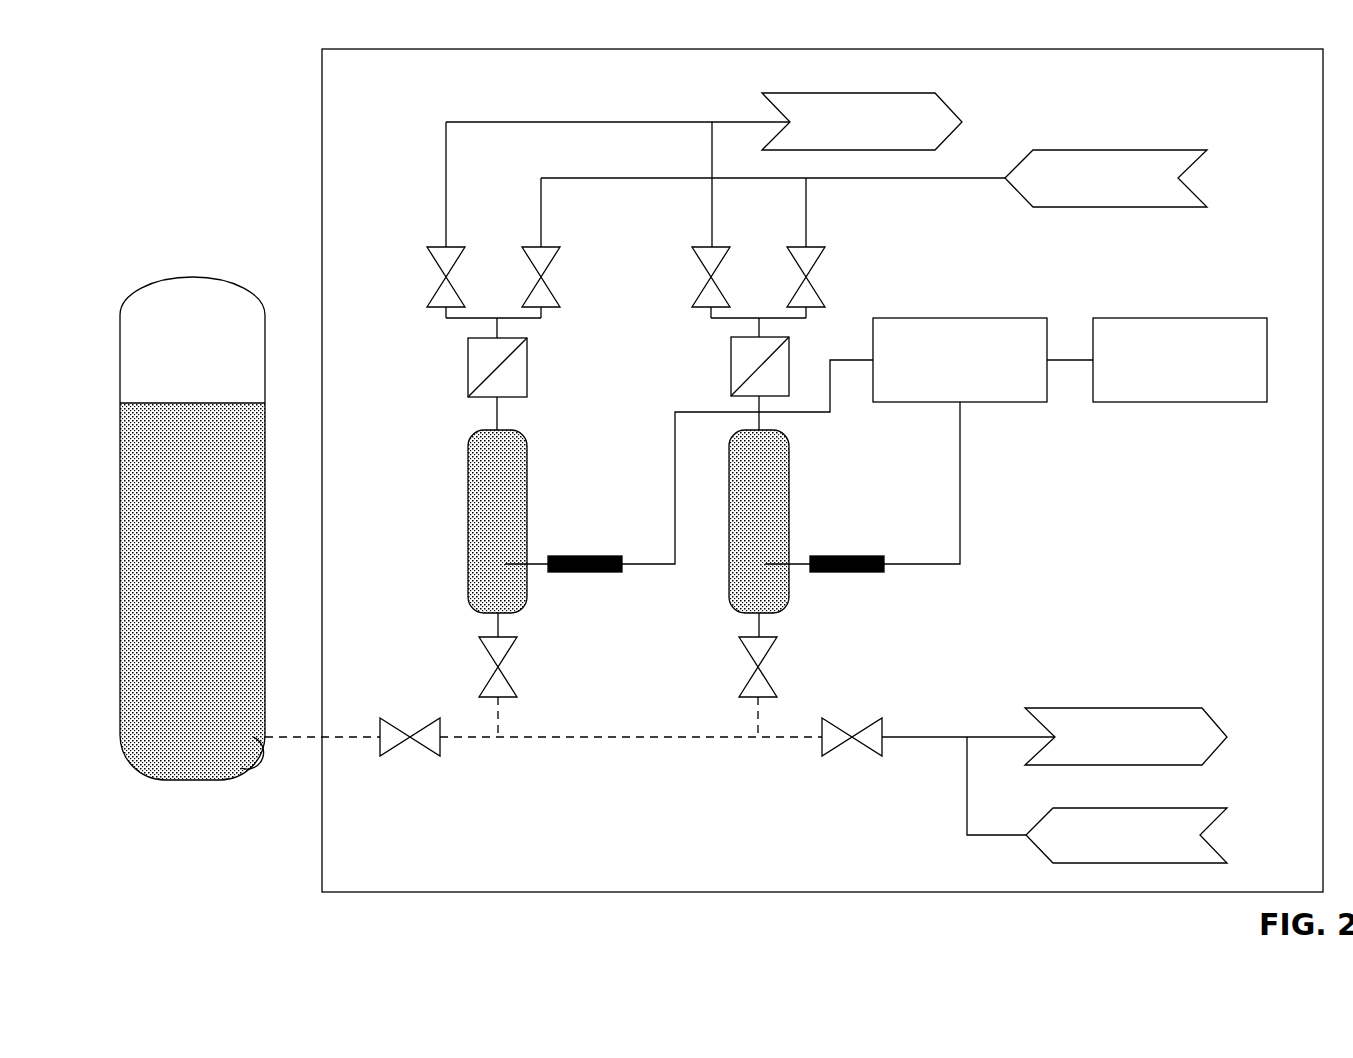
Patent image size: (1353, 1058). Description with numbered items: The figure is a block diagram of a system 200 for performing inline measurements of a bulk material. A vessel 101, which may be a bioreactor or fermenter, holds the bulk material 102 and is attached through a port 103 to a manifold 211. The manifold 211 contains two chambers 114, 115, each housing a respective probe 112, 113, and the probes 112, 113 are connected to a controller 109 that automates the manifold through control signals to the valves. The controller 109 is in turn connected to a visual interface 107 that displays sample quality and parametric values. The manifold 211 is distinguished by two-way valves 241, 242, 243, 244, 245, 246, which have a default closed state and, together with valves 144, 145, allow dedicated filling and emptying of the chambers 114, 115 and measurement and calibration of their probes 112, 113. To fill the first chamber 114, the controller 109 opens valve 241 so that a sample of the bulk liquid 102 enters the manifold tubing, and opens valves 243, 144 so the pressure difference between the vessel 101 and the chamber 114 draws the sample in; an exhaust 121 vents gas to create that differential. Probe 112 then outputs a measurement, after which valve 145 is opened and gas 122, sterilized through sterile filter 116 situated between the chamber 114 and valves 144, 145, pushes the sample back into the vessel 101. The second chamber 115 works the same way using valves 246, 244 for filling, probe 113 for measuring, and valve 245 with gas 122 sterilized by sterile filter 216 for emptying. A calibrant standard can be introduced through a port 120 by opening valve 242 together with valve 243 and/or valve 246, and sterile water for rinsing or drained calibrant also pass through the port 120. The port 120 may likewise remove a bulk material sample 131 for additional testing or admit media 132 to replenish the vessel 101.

The system 200 is at (148, 44).
The manifold 211 is at (384, 49).
The vessel 101 is at (190, 277).
The bulk material 102 is at (190, 403).
The port 103 is at (248, 757).
The visual interface 107 is at (1200, 318).
The controller 109 is at (980, 318).
The probe 112 is at (586, 556).
The probe 113 is at (848, 556).
The chamber 114 is at (468, 521).
The chamber 115 is at (729, 565).
The sterile filter 116 is at (468, 368).
The sterile filter 216 is at (731, 368).
The port 120 is at (925, 737).
The exhaust 121 is at (800, 93).
The gas 122 is at (1072, 150).
The bulk material sample 131 is at (1093, 708).
The media 132 is at (1093, 808).
The valve 144 is at (446, 247).
The valve 145 is at (541, 247).
The two-way valve 244 is at (700, 290).
The two-way valve 245 is at (818, 290).
The two-way valve 241 is at (428, 718).
The two-way valve 242 is at (836, 756).
The two-way valve 243 is at (508, 682).
The two-way valve 246 is at (768, 682).